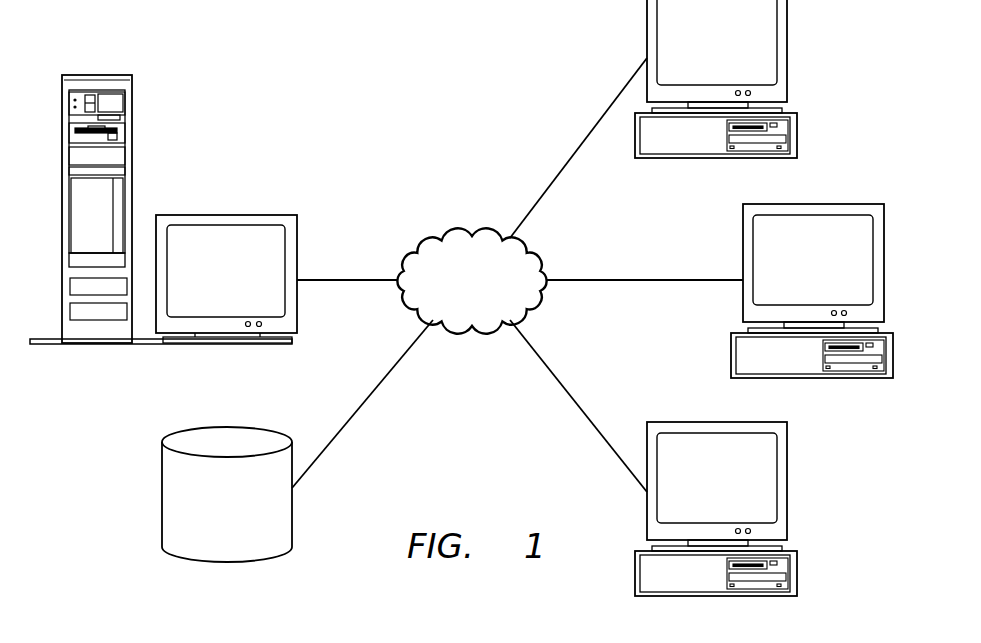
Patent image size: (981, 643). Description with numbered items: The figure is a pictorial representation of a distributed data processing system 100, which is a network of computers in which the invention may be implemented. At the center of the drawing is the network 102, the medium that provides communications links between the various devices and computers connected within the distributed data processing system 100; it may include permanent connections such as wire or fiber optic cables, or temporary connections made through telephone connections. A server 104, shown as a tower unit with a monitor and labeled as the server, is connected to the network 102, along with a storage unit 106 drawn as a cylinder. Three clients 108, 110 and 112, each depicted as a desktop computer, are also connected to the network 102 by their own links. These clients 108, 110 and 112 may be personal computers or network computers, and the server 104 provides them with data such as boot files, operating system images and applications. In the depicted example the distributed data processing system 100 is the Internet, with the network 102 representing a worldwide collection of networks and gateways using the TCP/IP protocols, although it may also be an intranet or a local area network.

The distributed data processing system 100 is at (344, 77).
The network 102 is at (493, 294).
The server 104 is at (247, 284).
The storage unit 106 is at (248, 518).
The client 108 is at (738, 56).
The client 110 is at (836, 276).
The client 112 is at (738, 494).